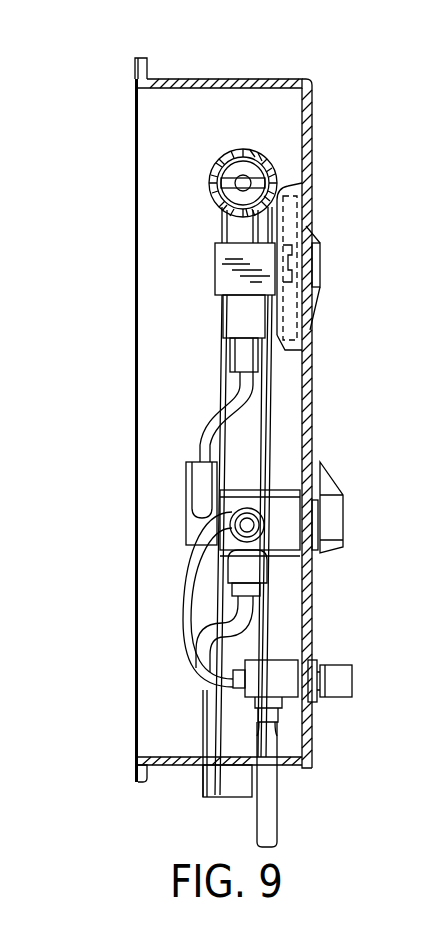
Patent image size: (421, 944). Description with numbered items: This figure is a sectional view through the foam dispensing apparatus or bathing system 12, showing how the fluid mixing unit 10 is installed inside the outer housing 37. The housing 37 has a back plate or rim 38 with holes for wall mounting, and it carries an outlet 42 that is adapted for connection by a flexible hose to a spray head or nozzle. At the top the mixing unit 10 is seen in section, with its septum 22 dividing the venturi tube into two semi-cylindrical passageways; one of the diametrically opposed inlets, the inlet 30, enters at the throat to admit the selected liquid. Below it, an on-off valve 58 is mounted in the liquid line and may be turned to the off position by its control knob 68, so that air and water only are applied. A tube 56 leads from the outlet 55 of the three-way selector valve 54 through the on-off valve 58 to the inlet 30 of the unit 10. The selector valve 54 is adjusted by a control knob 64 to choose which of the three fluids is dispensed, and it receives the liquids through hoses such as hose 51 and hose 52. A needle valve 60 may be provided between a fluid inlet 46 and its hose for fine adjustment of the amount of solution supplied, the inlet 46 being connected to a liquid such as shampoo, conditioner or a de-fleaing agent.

The mixing unit 10 is at (256, 132).
The foam dispensing apparatus or bathing system 12 is at (180, 419).
The septum 22 is at (238, 178).
The inlet 30 is at (240, 224).
The outer housing 37 is at (308, 131).
The back plate or rim 38 is at (138, 80).
The outlet 42 is at (230, 793).
The fluid inlet 46 is at (272, 815).
The hose 51 is at (205, 630).
The hose 52 is at (188, 590).
The three-way selector valve 54 is at (278, 492).
The outlet of selector valve 55 is at (188, 477).
The tube 56 is at (240, 395).
The on-off valve 58 is at (218, 265).
The needle valve 60 is at (285, 665).
The control knob 64 is at (335, 508).
The control knob 68 is at (322, 262).